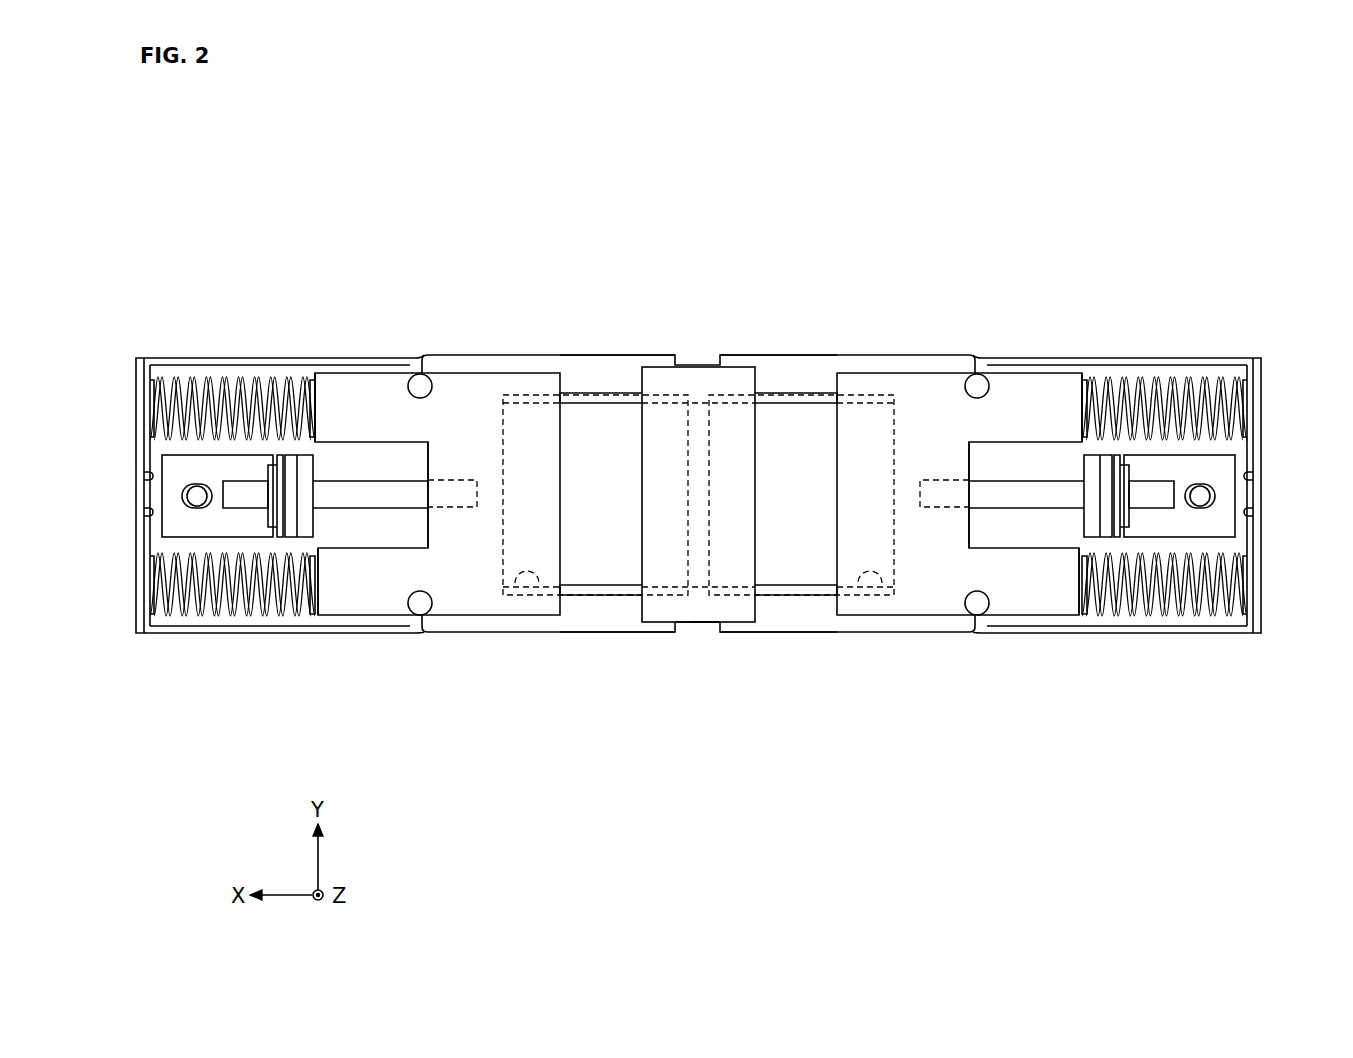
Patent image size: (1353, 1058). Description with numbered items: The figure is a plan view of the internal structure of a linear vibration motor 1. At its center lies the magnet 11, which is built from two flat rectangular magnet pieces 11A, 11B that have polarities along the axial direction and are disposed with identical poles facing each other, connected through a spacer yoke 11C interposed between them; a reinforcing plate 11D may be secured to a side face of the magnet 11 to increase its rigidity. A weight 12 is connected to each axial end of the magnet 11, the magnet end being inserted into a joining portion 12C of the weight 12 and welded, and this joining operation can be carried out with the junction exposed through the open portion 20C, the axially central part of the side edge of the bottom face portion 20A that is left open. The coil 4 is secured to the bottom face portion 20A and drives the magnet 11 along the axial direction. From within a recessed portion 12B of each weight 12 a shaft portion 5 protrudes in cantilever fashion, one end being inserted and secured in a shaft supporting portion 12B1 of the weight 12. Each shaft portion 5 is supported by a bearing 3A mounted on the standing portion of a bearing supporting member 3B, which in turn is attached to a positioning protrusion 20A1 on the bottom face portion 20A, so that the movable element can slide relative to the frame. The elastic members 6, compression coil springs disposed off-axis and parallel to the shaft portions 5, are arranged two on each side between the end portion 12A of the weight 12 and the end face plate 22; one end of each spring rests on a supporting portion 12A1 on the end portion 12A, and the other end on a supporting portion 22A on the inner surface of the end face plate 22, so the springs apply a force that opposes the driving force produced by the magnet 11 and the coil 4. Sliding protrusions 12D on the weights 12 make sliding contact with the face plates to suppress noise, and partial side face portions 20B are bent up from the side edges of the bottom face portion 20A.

The linear vibration motor 1 is at (1113, 240).
The bearing 3A is at (305, 517).
The bearing supporting member 3B is at (200, 537).
The coil 4 is at (705, 612).
The shaft portion 5 is at (353, 487).
The elastic member 6 is at (215, 377).
The magnet 11 is at (698, 468).
The magnet piece 11A is at (605, 410).
The magnet piece 11B is at (783, 410).
The spacer yoke 11C is at (708, 442).
The reinforcing plate 11D is at (600, 300).
The weight 12 is at (470, 375).
The end portion of weight 12A is at (303, 378).
The supporting portion 12A1 is at (290, 380).
The recessed portion 12B is at (427, 458).
The shaft supporting portion 12B1 is at (459, 492).
The joining portion 12C is at (516, 583).
The sliding protrusion 12D is at (420, 374).
The bottom face portion 20A is at (612, 624).
The positioning protrusion 20A1 is at (197, 508).
The partial side face portion 20B is at (197, 363).
The open portion 20C is at (968, 248).
The end face plate 22 is at (136, 587).
The supporting portion 22A is at (150, 358).